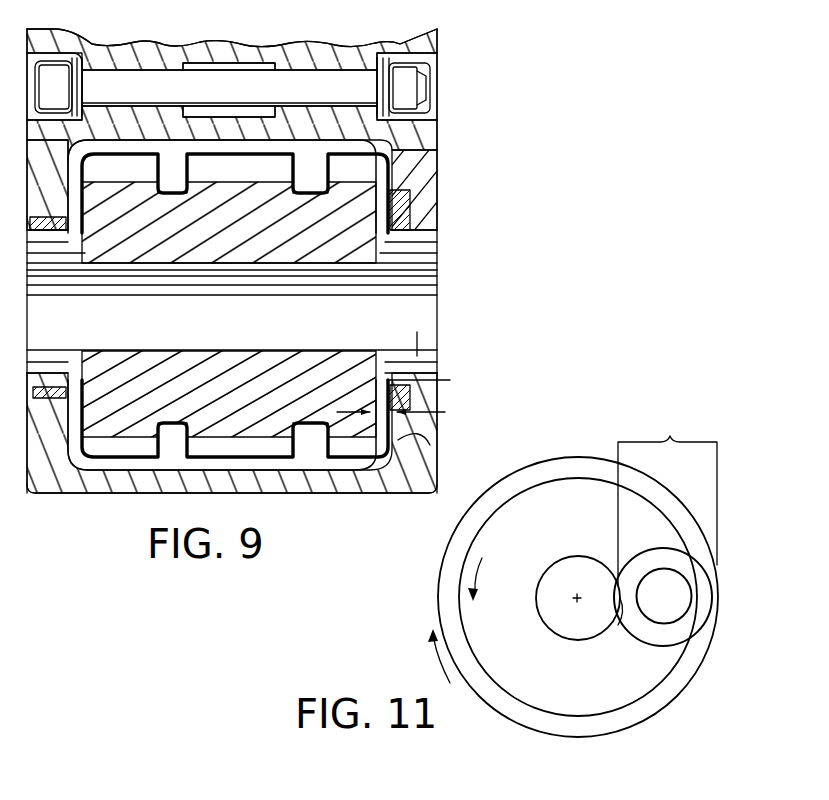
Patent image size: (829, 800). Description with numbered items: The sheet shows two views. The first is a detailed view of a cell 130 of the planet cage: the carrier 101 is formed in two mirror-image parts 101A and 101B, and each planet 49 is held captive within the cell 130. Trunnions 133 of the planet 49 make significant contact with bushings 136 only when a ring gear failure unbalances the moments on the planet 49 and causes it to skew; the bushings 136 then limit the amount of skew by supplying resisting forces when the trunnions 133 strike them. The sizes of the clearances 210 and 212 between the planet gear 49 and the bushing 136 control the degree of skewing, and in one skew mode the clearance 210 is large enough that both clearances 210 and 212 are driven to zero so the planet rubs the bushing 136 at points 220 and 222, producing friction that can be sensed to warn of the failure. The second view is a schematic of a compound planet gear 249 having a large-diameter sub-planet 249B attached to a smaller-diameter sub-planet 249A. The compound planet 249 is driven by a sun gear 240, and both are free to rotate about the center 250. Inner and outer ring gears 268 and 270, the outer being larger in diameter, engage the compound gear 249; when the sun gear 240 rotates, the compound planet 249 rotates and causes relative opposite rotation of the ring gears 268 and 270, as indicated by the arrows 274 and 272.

In FIG. 9, the carrier 101 is at (441, 211).
In FIG. 9, the carrier part 101A is at (165, 108).
In FIG. 9, the carrier part 101B is at (342, 118).
In FIG. 9, the bushing 136 is at (55, 227).
In FIG. 9, the cell 130 is at (176, 447).
In FIG. 9, the trunnion 133 is at (412, 252).
In FIG. 9, the planet 49 is at (265, 245).
In FIG. 9, the clearance 210 is at (417, 343).
In FIG. 9, the clearance 212 is at (445, 413).
In FIG. 9, the point 220 is at (415, 384).
In FIG. 9, the point 222 is at (405, 440).
In FIG. 11, the outer ring gear 270 is at (664, 713).
In FIG. 11, the inner ring gear 268 is at (668, 677).
In FIG. 11, the center 250 is at (575, 600).
In FIG. 11, the compound planet gear 249 is at (670, 440).
In FIG. 11, the smaller diameter sub-planet 249A is at (680, 623).
In FIG. 11, the large diameter sub-planet 249B is at (703, 560).
In FIG. 11, the sun gear 240 is at (612, 616).
In FIG. 11, the arrow 274 is at (482, 558).
In FIG. 11, the arrow 272 is at (437, 653).